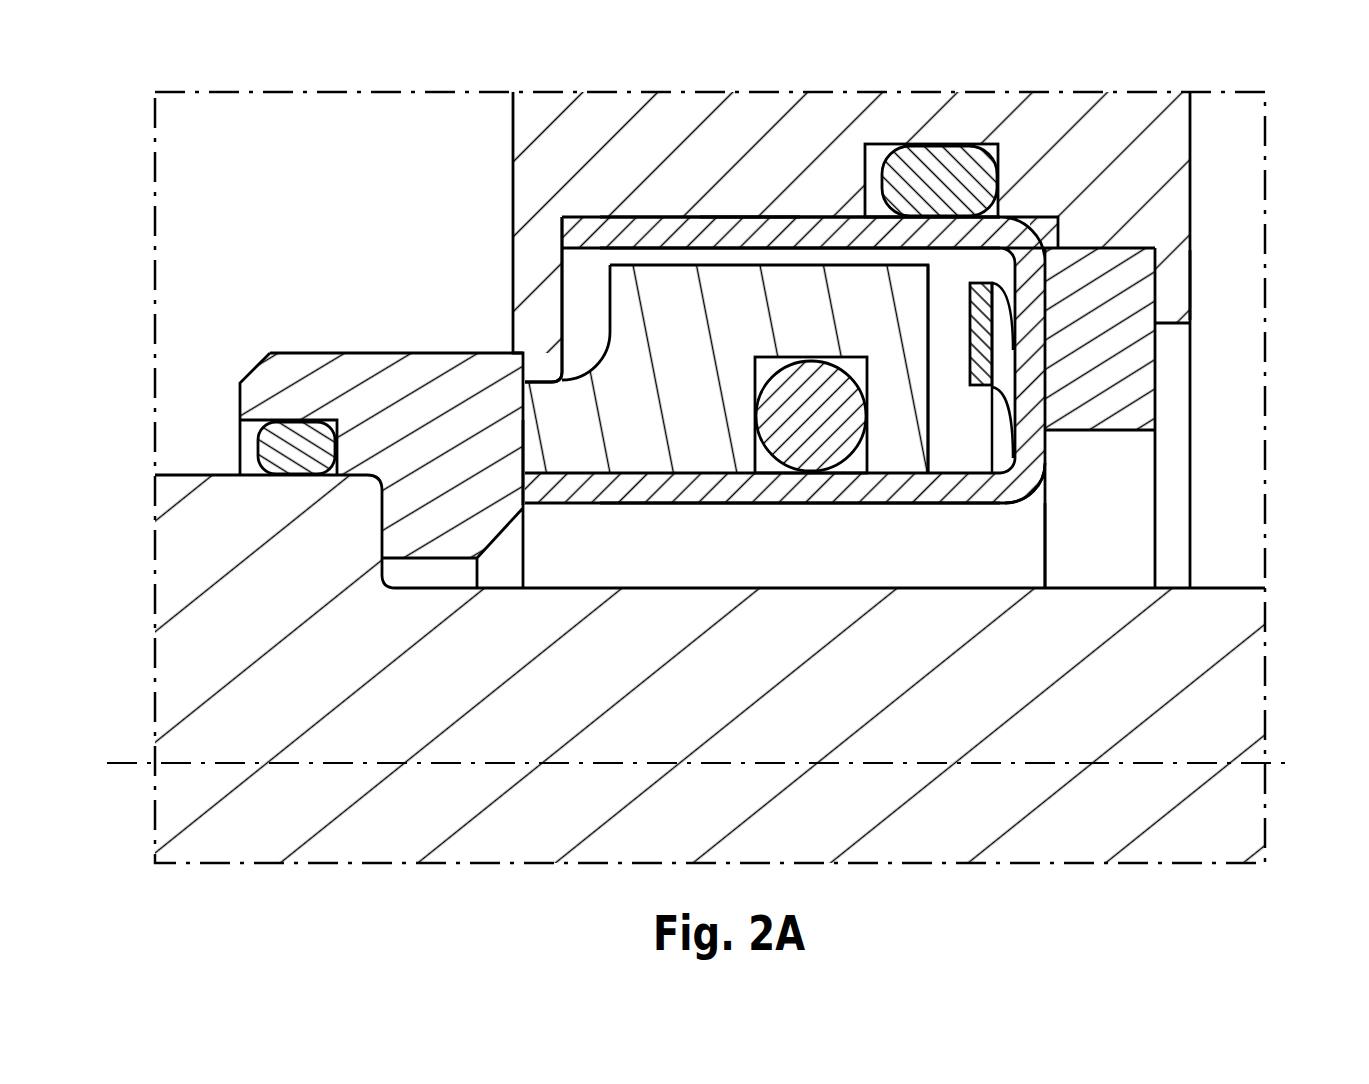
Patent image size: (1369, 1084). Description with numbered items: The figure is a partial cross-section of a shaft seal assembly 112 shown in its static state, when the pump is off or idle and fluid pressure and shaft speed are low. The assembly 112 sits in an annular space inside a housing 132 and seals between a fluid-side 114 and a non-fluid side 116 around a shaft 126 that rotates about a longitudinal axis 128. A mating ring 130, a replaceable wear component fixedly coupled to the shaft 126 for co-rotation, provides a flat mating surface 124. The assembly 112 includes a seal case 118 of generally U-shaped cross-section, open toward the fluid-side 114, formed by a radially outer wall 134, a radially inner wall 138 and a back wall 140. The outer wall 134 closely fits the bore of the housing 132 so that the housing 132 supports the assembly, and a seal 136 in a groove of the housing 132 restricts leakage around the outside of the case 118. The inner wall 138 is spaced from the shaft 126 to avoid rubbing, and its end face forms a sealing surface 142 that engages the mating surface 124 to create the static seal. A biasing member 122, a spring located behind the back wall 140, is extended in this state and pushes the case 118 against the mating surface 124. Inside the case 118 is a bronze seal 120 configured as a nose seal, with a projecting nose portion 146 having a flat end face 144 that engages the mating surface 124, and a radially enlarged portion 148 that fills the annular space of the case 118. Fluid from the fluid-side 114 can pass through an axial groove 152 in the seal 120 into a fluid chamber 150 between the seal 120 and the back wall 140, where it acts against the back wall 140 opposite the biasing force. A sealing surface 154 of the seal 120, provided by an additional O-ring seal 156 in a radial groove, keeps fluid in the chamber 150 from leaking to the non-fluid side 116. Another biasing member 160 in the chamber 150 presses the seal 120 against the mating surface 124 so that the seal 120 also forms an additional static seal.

The shaft seal assembly 112 is at (540, 264).
The fluid-side 114 is at (268, 247).
The non-fluid side 116 is at (993, 525).
The seal case 118 is at (745, 212).
The seal 120 is at (622, 390).
The biasing member 122 is at (1100, 325).
The mating surface 124 is at (523, 428).
The shaft 126 is at (465, 650).
The longitudinal axis 128 is at (327, 763).
The mating ring 130 is at (397, 448).
The housing 132 is at (1172, 282).
The radially outer wall 134 is at (738, 234).
The seal 136 is at (940, 182).
The radially inner wall 138 is at (683, 483).
The back wall 140 is at (1030, 445).
The sealing surface 142 is at (522, 487).
The flat end face 144 is at (522, 447).
The projecting nose portion 146 is at (598, 428).
The radially enlarged portion 148 is at (888, 445).
The fluid chamber 150 is at (967, 267).
The axial groove 152 is at (670, 260).
The sealing surface 154 is at (811, 473).
The additional seal 156 is at (813, 410).
The biasing member 160 is at (977, 345).